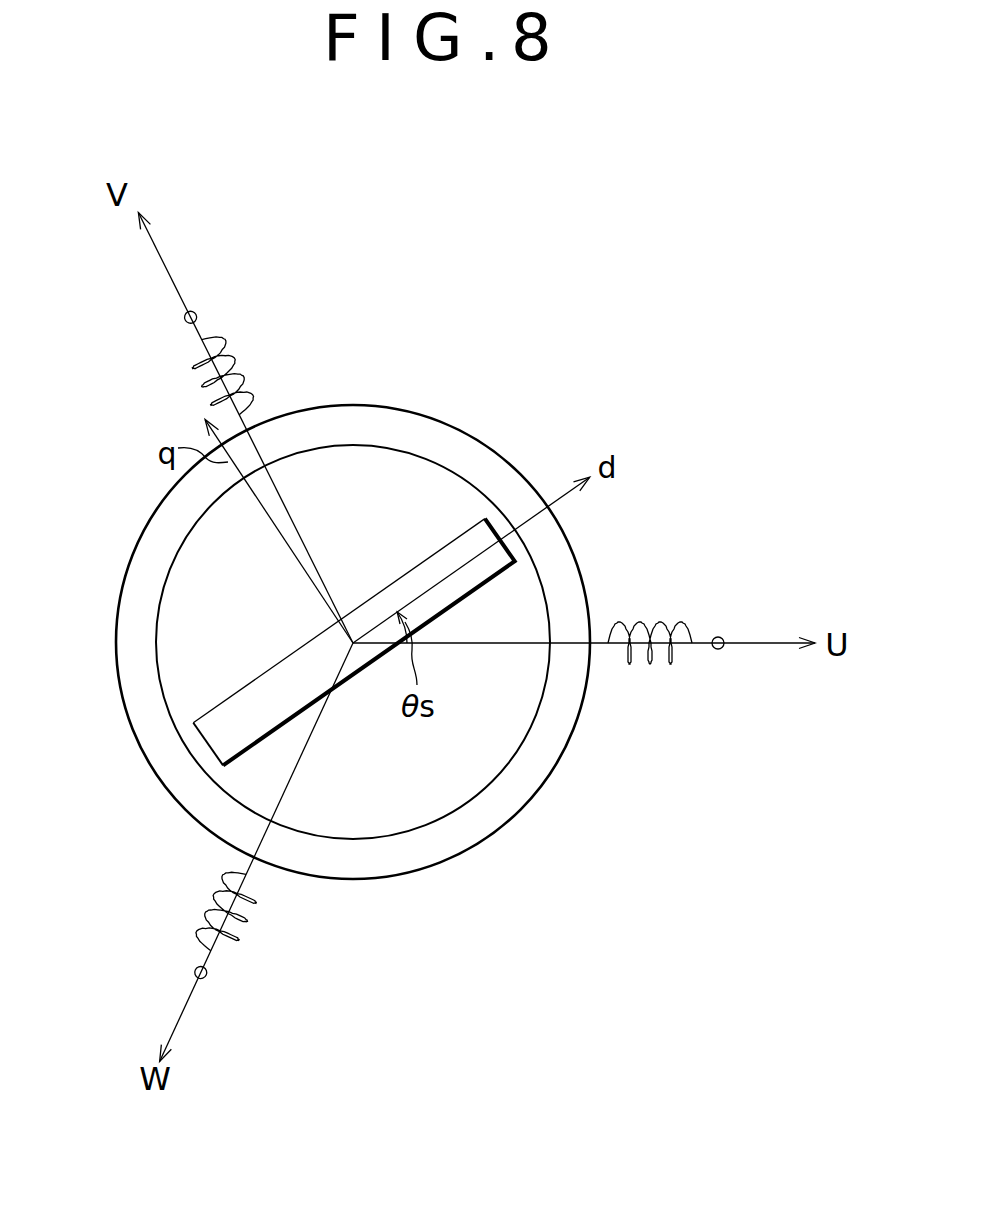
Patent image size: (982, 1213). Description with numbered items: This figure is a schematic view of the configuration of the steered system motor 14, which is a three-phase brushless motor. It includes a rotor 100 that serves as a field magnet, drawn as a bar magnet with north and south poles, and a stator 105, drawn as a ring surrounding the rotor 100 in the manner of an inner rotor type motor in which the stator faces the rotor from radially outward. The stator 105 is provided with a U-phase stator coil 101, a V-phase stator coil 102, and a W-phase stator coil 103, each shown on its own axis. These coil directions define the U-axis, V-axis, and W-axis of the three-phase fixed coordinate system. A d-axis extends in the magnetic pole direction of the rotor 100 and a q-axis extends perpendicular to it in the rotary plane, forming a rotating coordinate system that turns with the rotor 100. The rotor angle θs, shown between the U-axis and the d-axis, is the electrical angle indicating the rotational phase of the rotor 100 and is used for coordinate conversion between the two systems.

The steered system motor 14 is at (506, 302).
The rotor 100 is at (262, 700).
The U-phase stator coil 101 is at (642, 621).
The V-phase stator coil 102 is at (223, 357).
The W-phase stator coil 103 is at (217, 903).
The stator 105 is at (540, 755).